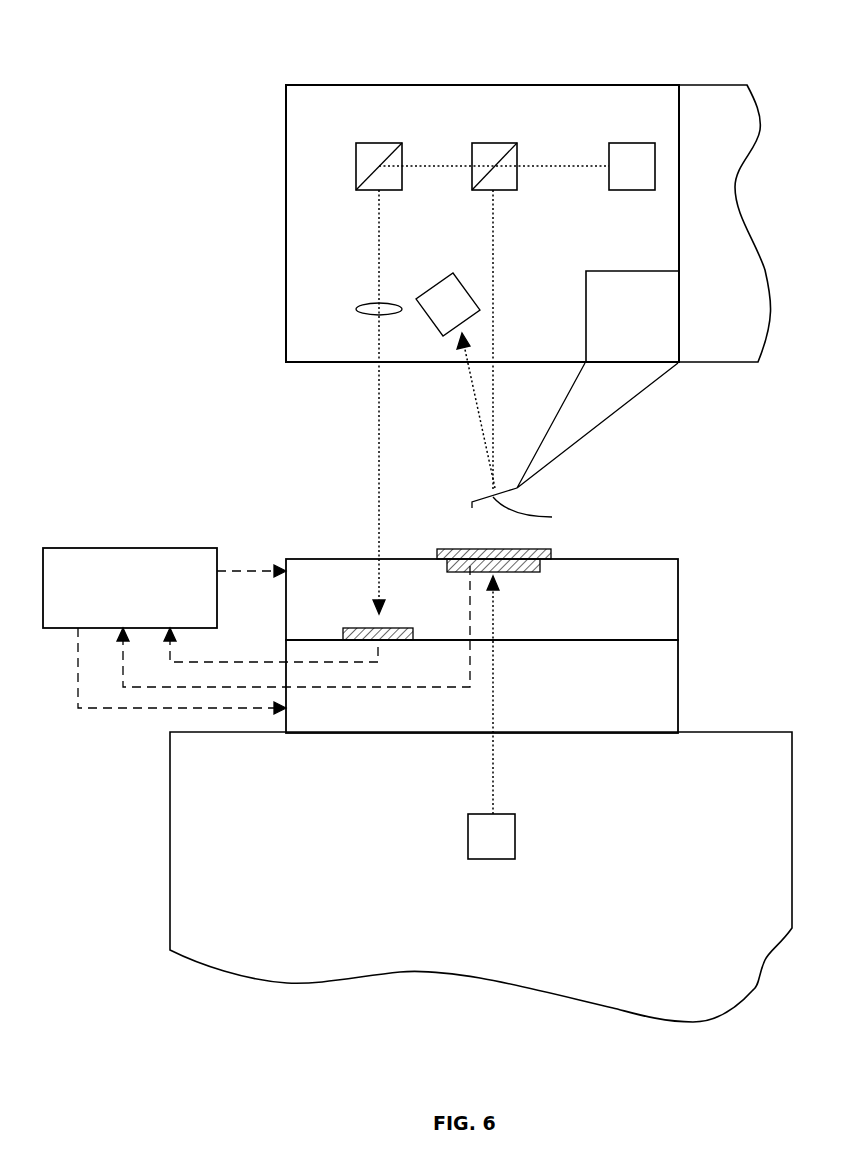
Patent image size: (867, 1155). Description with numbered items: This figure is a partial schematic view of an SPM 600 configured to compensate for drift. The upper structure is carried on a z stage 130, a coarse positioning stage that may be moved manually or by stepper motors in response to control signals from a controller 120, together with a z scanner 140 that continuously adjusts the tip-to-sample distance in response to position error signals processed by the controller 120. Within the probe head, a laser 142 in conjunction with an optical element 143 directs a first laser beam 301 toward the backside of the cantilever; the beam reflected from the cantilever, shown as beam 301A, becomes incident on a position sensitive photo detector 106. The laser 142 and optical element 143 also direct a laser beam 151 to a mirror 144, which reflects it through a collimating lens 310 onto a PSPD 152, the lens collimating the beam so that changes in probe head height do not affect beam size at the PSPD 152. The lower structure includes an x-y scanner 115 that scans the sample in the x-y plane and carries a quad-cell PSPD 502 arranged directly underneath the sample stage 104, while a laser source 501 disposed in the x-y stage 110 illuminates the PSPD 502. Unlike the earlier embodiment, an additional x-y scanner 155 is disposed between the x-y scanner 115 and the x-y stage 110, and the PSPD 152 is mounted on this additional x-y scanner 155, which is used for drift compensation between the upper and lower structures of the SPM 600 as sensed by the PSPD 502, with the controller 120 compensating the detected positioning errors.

The SPM 600 is at (262, 40).
The z stage 130 is at (745, 341).
The z scanner 140 is at (654, 329).
The mirror 144 is at (380, 143).
The optical element 143 is at (517, 177).
The laser 142 is at (632, 143).
The position sensitive photo detector 106 is at (436, 283).
The collimating lens 310 is at (360, 308).
The first laser beam 301 is at (495, 328).
The reflected beam 301A is at (483, 442).
The laser beam 151 is at (377, 453).
The PSPD 152 is at (367, 628).
The sample stage 104 is at (510, 547).
The quad-cell PSPD 502 is at (517, 572).
The x-y scanner 115 is at (665, 596).
The additional x-y scanner 155 is at (639, 714).
The x-y stage 110 is at (755, 794).
The laser source 501 is at (468, 837).
The controller 120 is at (149, 620).